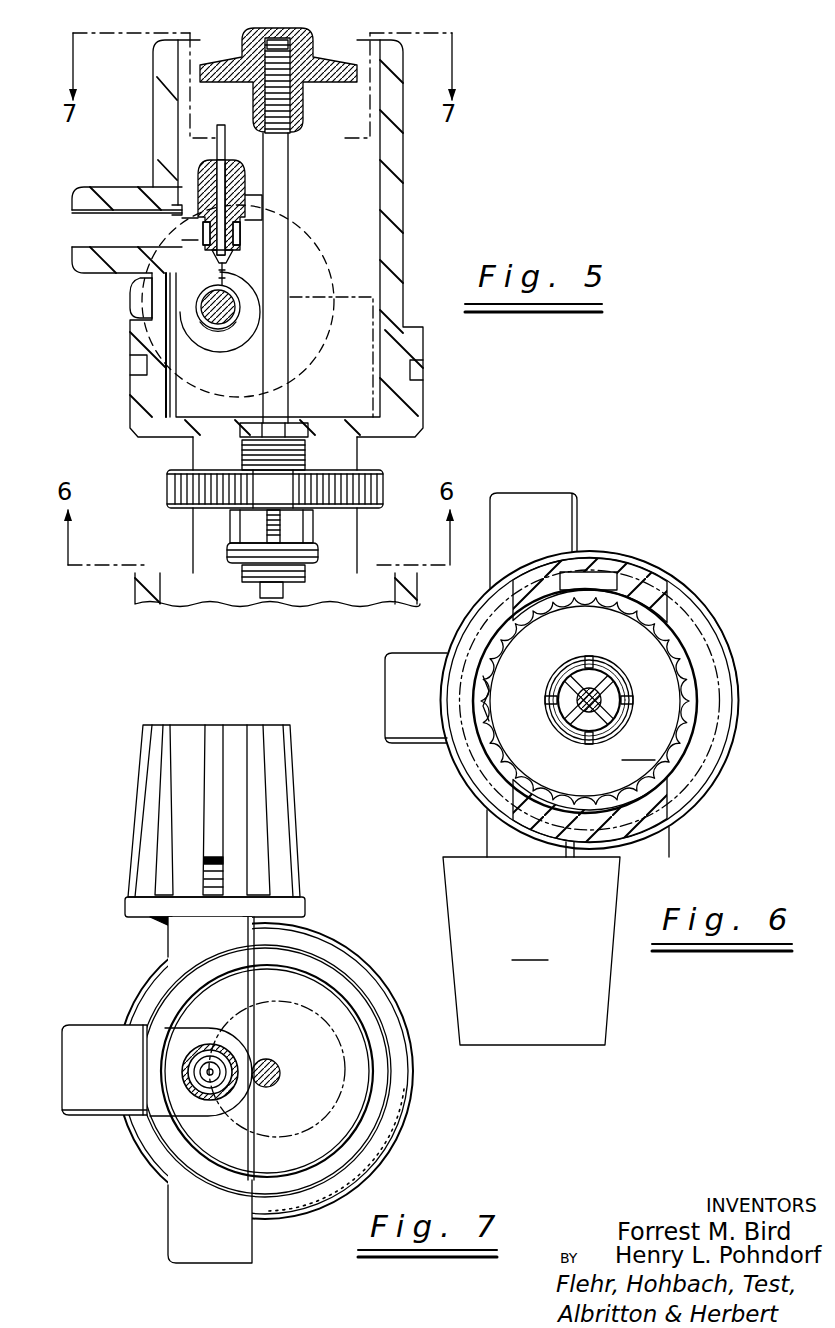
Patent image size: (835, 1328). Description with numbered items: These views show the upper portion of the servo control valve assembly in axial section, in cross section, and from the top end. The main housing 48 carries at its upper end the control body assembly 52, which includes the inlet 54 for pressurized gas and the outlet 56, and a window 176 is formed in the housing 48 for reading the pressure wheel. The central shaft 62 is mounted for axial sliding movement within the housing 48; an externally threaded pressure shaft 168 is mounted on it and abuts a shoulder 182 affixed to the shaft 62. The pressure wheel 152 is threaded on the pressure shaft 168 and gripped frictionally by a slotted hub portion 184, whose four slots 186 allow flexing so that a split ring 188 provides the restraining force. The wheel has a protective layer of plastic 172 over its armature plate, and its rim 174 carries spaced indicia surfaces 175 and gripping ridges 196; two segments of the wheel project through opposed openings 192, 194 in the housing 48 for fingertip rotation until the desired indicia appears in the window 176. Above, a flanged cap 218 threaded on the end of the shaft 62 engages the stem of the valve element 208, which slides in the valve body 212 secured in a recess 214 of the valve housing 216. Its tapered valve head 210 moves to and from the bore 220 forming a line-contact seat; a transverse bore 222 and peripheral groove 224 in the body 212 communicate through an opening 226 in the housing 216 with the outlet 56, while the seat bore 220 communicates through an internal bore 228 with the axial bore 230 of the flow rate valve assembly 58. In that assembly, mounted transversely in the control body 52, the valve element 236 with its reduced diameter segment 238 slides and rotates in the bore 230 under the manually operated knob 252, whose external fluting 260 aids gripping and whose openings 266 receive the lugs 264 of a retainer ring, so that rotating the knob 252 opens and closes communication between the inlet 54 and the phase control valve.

In FIG. 5, the main housing 48 is at (134, 592).
In FIG. 6, the main housing 48 is at (670, 578).
In FIG. 5, the control body assembly 52 is at (406, 205).
In FIG. 6, the control body assembly 52 is at (741, 672).
In FIG. 7, the control body assembly 52 is at (411, 1112).
In FIG. 6, the inlet 54 is at (550, 523).
In FIG. 7, the inlet 54 is at (183, 1238).
In FIG. 5, the outlet 56 is at (80, 240).
In FIG. 6, the outlet 56 is at (415, 718).
In FIG. 7, the outlet 56 is at (105, 1082).
In FIG. 5, the flow rate and metering valve assembly 58 is at (129, 300).
In FIG. 6, the flow rate and metering valve assembly 58 is at (452, 872).
In FIG. 7, the flow rate and metering valve assembly 58 is at (301, 843).
In FIG. 5, the central shaft 62 is at (292, 392).
In FIG. 6, the central shaft 62 is at (601, 682).
In FIG. 7, the central shaft 62 is at (283, 1066).
In FIG. 5, the pressure wheel 152 is at (388, 485).
In FIG. 6, the pressure wheel 152 is at (696, 718).
In FIG. 5, the pressure shaft 168 is at (262, 457).
In FIG. 6, the pressure shaft 168 is at (617, 697).
In FIG. 6, the protective layer of plastic 172 is at (639, 749).
In FIG. 6, the rim 174 is at (736, 622).
In FIG. 5, the spaced surfaces 175 is at (185, 484).
In FIG. 6, the spaced surfaces 175 is at (586, 592).
In FIG. 6, the window 176 is at (616, 578).
In FIG. 5, the shoulder 182 is at (300, 432).
In FIG. 5, the slotted hub portion 184 is at (316, 525).
In FIG. 6, the slotted hub portion 184 is at (557, 670).
In FIG. 5, the slots 186 is at (265, 518).
In FIG. 6, the slots 186 is at (545, 699).
In FIG. 5, the split ring 188 is at (232, 548).
In FIG. 6, the split ring 188 is at (633, 701).
In FIG. 5, the opening 192 is at (358, 552).
In FIG. 6, the opening 192 is at (675, 778).
In FIG. 5, the opening 194 is at (192, 553).
In FIG. 6, the opening 194 is at (512, 782).
In FIG. 5, the ridges 196 is at (205, 487).
In FIG. 6, the ridges 196 is at (487, 717).
In FIG. 5, the valve element 208 is at (222, 132).
In FIG. 7, the valve element 208 is at (213, 1070).
In FIG. 5, the tapered valve head 210 is at (232, 262).
In FIG. 5, the valve body 212 is at (198, 180).
In FIG. 7, the valve body 212 is at (217, 1056).
In FIG. 5, the recess 214 is at (245, 188).
In FIG. 7, the recess 214 is at (209, 1046).
In FIG. 5, the valve housing 216 is at (256, 212).
In FIG. 7, the valve housing 216 is at (240, 1098).
In FIG. 5, the flanged cap 218 is at (357, 73).
In FIG. 5, the bore 220 is at (192, 229).
In FIG. 5, the transverse bore 222 is at (240, 225).
In FIG. 5, the peripheral groove 224 is at (242, 237).
In FIG. 5, the opening 226 is at (172, 215).
In FIG. 5, the internal bore 228 is at (230, 279).
In FIG. 5, the axial bore 230 is at (210, 330).
In FIG. 5, the valve element 236 is at (195, 312).
In FIG. 5, the reduced diameter segment 238 is at (236, 330).
In FIG. 5, the knob 252 is at (132, 292).
In FIG. 6, the knob 252 is at (530, 949).
In FIG. 7, the knob 252 is at (240, 792).
In FIG. 7, the external fluting 260 is at (175, 795).
In FIG. 7, the lugs 264 is at (205, 874).
In FIG. 7, the openings 266 is at (222, 862).